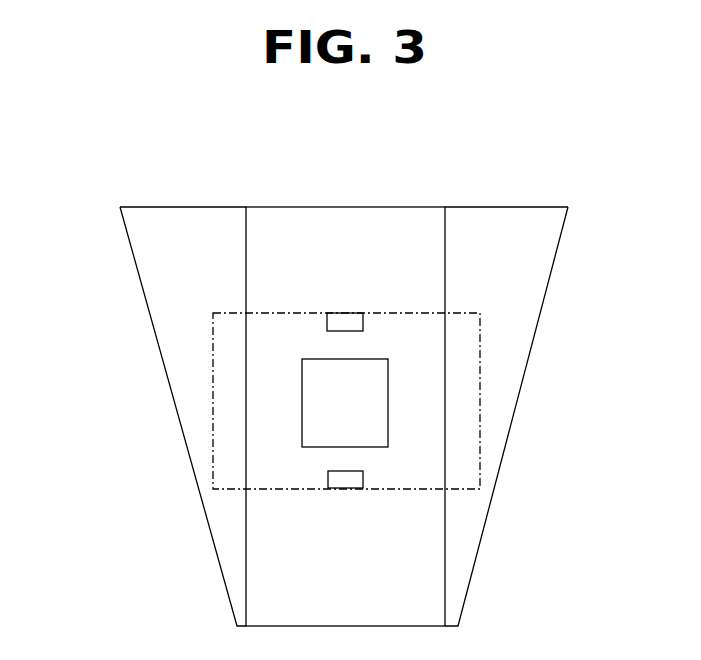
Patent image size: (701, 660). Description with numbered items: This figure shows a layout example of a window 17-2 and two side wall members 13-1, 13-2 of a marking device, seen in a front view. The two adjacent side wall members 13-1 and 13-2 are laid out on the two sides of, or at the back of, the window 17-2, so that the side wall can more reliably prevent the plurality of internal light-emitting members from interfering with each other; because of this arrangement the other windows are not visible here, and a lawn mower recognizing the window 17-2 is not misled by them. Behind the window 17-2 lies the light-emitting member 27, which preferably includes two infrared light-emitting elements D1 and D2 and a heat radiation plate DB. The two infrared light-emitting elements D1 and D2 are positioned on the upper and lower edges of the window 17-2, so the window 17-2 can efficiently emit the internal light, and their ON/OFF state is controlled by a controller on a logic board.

The light-emitting member 27 is at (341, 215).
The side wall member 13-1 is at (547, 288).
The side wall member 13-2 is at (143, 290).
The window 17-2 is at (213, 388).
The infrared light-emitting element D2 is at (347, 322).
The infrared light-emitting element D1 is at (347, 483).
The heat radiation plate DB is at (376, 404).